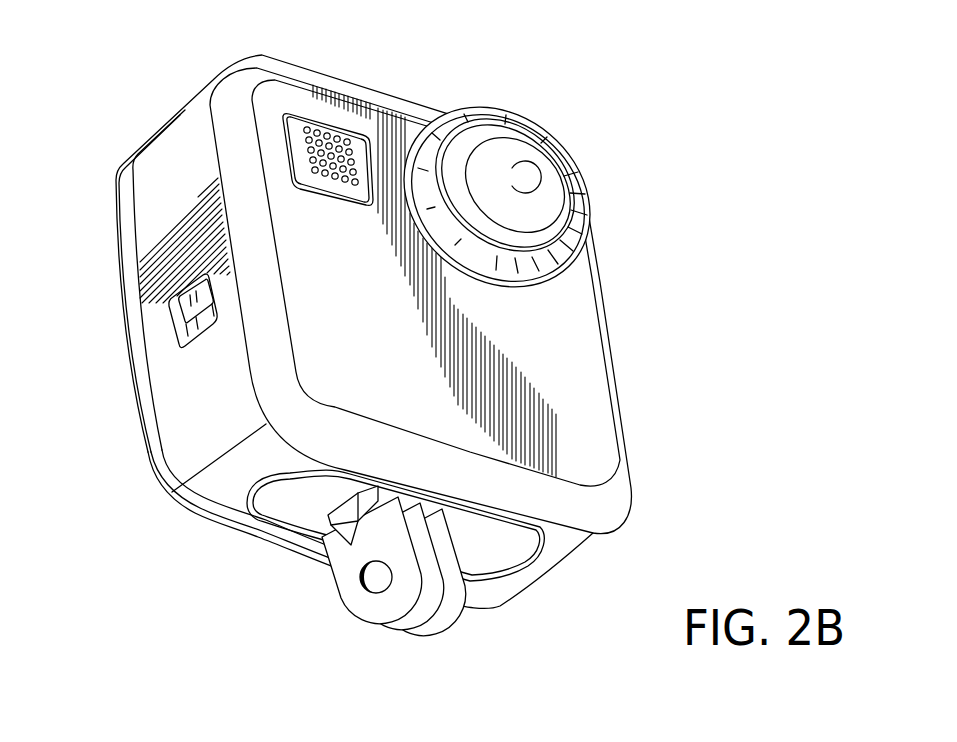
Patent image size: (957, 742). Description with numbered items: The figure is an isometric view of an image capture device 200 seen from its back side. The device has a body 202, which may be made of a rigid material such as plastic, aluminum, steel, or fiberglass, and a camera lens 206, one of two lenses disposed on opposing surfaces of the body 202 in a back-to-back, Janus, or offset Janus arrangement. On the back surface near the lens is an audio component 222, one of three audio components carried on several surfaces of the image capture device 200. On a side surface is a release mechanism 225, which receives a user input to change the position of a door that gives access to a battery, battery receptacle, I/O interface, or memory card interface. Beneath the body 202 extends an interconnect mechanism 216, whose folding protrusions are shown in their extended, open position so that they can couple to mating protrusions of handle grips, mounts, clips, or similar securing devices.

The image capture device 200 is at (403, 332).
The body 202 is at (609, 337).
The camera lens 206 is at (524, 179).
The interconnect mechanism 216 is at (352, 563).
The audio component 222 is at (307, 130).
The release mechanism 225 is at (168, 318).